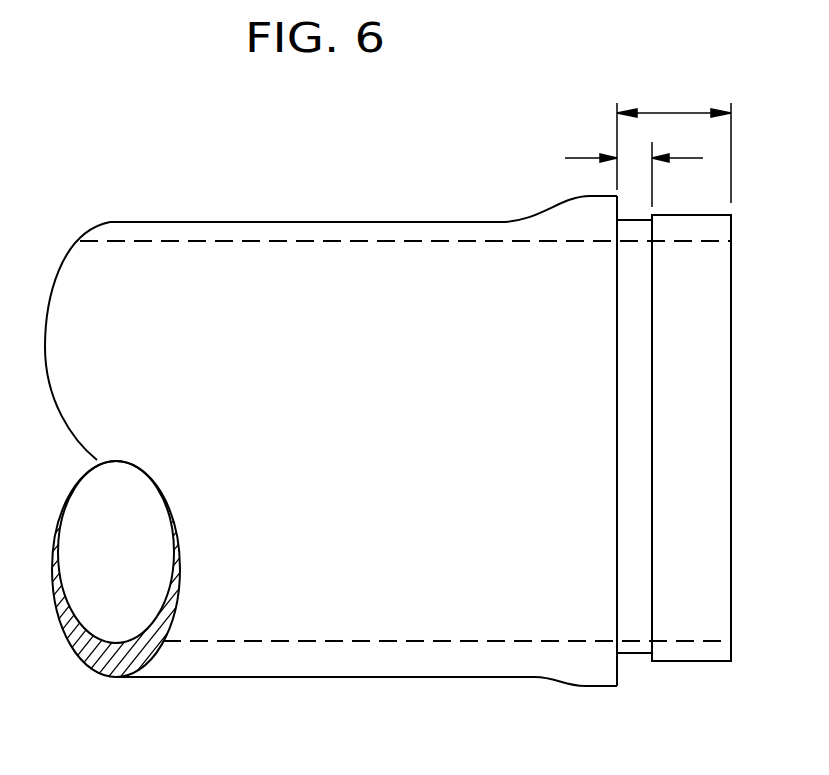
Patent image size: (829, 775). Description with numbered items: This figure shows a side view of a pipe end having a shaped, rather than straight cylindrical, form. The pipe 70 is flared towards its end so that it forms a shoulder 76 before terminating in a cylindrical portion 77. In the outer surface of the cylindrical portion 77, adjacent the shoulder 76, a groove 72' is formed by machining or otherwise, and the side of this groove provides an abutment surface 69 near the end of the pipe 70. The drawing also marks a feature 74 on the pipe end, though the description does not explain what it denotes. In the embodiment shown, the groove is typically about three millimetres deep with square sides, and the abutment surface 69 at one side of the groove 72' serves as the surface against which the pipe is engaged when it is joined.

The abutment surface 69 is at (637, 221).
The pipe 70 is at (395, 427).
The groove 72' is at (642, 138).
The inner flange portion 74 is at (655, 652).
The shoulder 76 is at (617, 684).
The cylindrical portion 77 is at (710, 662).